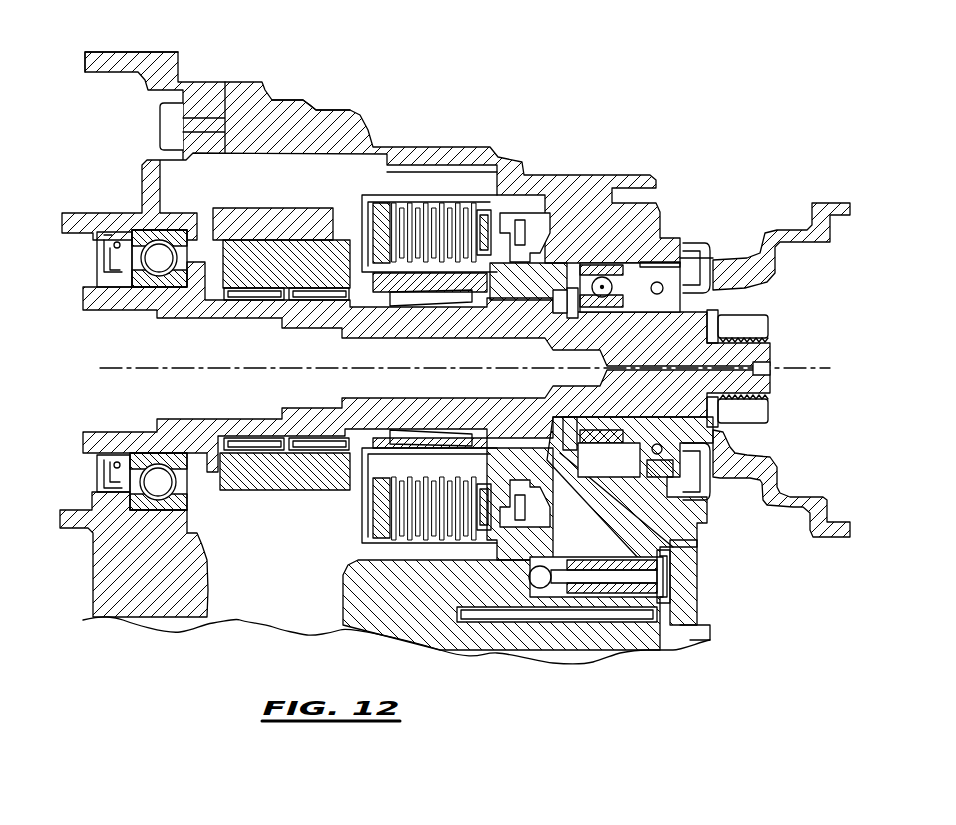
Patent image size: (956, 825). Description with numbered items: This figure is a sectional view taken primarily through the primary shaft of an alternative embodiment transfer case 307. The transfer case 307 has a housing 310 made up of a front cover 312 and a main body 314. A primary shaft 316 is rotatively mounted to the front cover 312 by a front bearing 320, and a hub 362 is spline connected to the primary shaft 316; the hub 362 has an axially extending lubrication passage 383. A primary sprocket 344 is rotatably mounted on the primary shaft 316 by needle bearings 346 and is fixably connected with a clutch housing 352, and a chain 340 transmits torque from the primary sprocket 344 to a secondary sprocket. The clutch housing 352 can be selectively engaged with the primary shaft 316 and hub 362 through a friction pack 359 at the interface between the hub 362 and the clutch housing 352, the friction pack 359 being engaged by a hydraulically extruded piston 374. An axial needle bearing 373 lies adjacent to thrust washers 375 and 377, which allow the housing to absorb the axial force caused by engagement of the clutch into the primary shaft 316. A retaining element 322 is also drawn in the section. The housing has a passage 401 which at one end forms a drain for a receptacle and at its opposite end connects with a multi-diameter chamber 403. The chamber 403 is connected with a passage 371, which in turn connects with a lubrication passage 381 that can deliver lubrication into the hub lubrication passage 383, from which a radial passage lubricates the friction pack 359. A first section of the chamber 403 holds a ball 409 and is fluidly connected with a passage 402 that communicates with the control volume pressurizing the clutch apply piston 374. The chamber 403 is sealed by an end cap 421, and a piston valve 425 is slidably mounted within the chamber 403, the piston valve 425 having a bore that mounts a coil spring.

The transfer case 307 is at (465, 86).
The housing 310 is at (225, 82).
The front cover 312 is at (100, 52).
The main body 314 is at (272, 100).
The primary shaft 316 is at (772, 360).
The front bearing 320 is at (140, 285).
The retaining clip 322 is at (620, 270).
The chain 340 is at (257, 207).
The primary sprocket 344 is at (240, 270).
The needle bearings 346 is at (243, 440).
The clutch housing 352 is at (380, 205).
The friction pack 359 is at (458, 212).
The hub 362 is at (437, 300).
The passage 371 is at (614, 537).
The axial needle bearing 373 is at (565, 272).
The piston 374 is at (512, 218).
The thrust washer 375 is at (547, 300).
The thrust washer 377 is at (585, 322).
The lubrication passage 381 is at (503, 443).
The lubrication passage 383 is at (386, 452).
The passage 401 is at (478, 620).
The passage 402 is at (537, 574).
The multi-diameter chamber 403 is at (644, 560).
The ball 409 is at (565, 582).
The end cap 421 is at (697, 578).
The piston valve 425 is at (592, 585).